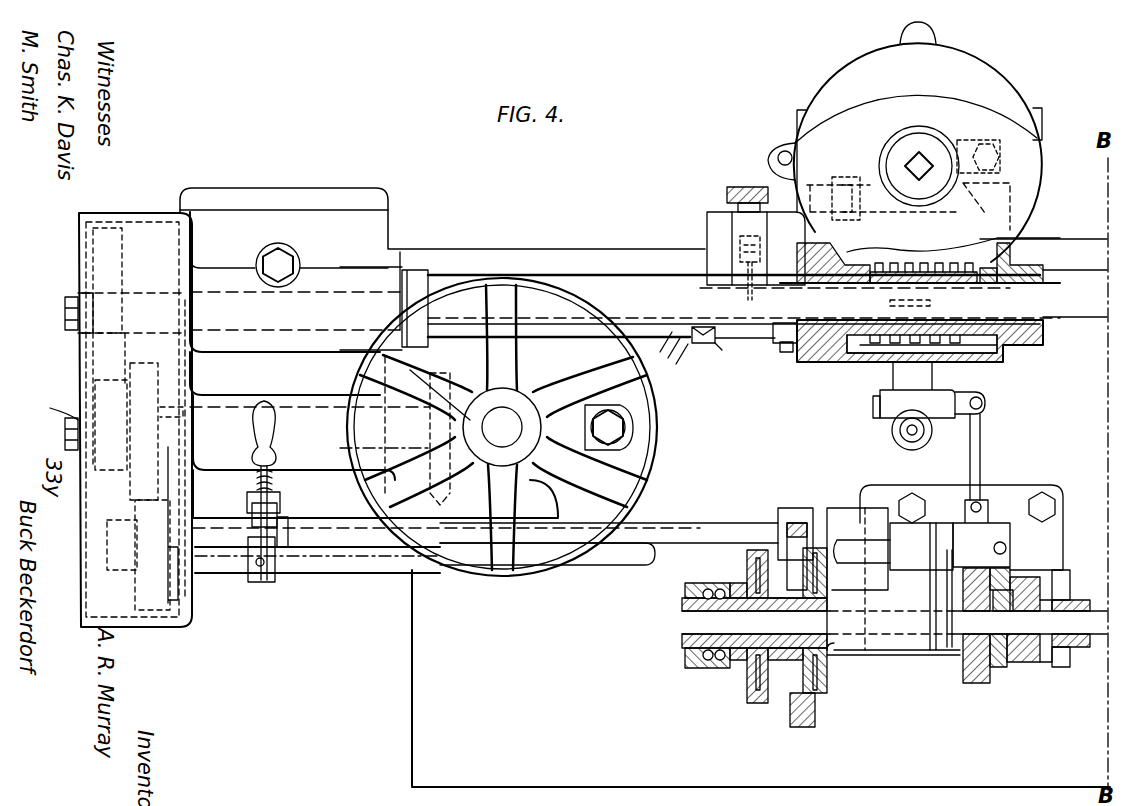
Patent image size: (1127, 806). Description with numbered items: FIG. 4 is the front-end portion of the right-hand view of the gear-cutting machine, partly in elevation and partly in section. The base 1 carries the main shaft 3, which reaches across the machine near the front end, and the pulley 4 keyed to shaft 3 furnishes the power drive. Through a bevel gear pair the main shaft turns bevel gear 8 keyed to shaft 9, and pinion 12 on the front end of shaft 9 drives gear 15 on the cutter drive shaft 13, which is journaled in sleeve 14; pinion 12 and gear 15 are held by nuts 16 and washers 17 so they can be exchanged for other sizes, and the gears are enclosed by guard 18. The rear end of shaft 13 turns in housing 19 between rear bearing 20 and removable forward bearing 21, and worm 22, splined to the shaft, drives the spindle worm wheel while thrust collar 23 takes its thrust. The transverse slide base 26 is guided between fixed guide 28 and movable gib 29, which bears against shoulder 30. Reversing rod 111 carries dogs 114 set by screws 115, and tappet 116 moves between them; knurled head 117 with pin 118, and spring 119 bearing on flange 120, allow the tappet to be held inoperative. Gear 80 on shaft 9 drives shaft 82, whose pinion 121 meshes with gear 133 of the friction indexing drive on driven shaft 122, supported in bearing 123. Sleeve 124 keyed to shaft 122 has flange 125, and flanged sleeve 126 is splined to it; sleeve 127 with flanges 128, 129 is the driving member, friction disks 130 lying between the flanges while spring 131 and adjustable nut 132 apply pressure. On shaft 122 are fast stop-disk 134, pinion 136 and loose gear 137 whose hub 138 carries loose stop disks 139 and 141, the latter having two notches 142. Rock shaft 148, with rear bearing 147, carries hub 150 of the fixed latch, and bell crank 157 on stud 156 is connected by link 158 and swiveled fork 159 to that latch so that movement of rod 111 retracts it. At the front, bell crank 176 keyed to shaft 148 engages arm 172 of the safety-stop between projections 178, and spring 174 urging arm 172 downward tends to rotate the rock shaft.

The base 1 is at (425, 670).
The main shaft 3 is at (502, 427).
The pulley 4 is at (502, 447).
The bevel gear 8 is at (415, 470).
The shaft 9 is at (45, 428).
The pinion 12 is at (98, 470).
The cutter drive shaft 13 is at (63, 312).
The sleeve 14 is at (378, 265).
The gear 15 is at (108, 228).
The nuts 16 is at (78, 330).
The washers 17 is at (92, 336).
The guard 18 is at (170, 627).
The housing 19 is at (975, 362).
The rear bearing 20 is at (1030, 345).
The forward bearing 21 is at (790, 360).
The worm 22 is at (855, 362).
The thrust collar 23 is at (1000, 265).
The base of sleeve 26 is at (963, 217).
The fixed guide 28 is at (973, 197).
The movable gib 29 is at (858, 185).
The transverse shoulder 30 is at (830, 195).
The gear 80 is at (135, 516).
The shaft 82 is at (107, 549).
The reversing rod 111 is at (675, 354).
The dogs 114 is at (760, 350).
The screws 115 is at (722, 345).
The tappet 116 is at (700, 300).
The knurled head 117 is at (742, 186).
The pin 118 is at (688, 173).
The spring 119 is at (740, 230).
The flange 120 is at (745, 262).
The pinion 121 is at (790, 510).
The driven indexing shaft 122 is at (683, 618).
The bearing 123 is at (845, 652).
The sleeve 124 is at (683, 642).
The annular flange 125 is at (828, 690).
The flanged sleeve 126 is at (745, 665).
The sleeve 127 is at (790, 705).
The flange 128 is at (800, 700).
The flange 129 is at (770, 700).
The friction disks 130 is at (750, 568).
The spring 131 is at (690, 660).
The adjustable nut 132 is at (690, 648).
The gear 133 is at (808, 715).
The fast stop-disk 134 is at (975, 685).
The pinion 136 is at (1072, 645).
The loose gear 137 is at (1022, 668).
The extended hub 138 is at (995, 685).
The first loose stop disk 139 is at (1005, 685).
The second loose stop-disk 141 is at (1005, 690).
The notches 142 is at (1010, 572).
The rear bearing 147 is at (895, 560).
The rock shaft 148 is at (372, 568).
The hub 150 is at (963, 525).
The stud 156 is at (908, 440).
The bell crank 157 is at (893, 415).
The link 158 is at (982, 450).
The swiveled fork 159 is at (985, 397).
The arm 172 is at (280, 495).
The spring 174 is at (256, 474).
The bell crank 176 is at (262, 584).
The projections 178 is at (288, 518).